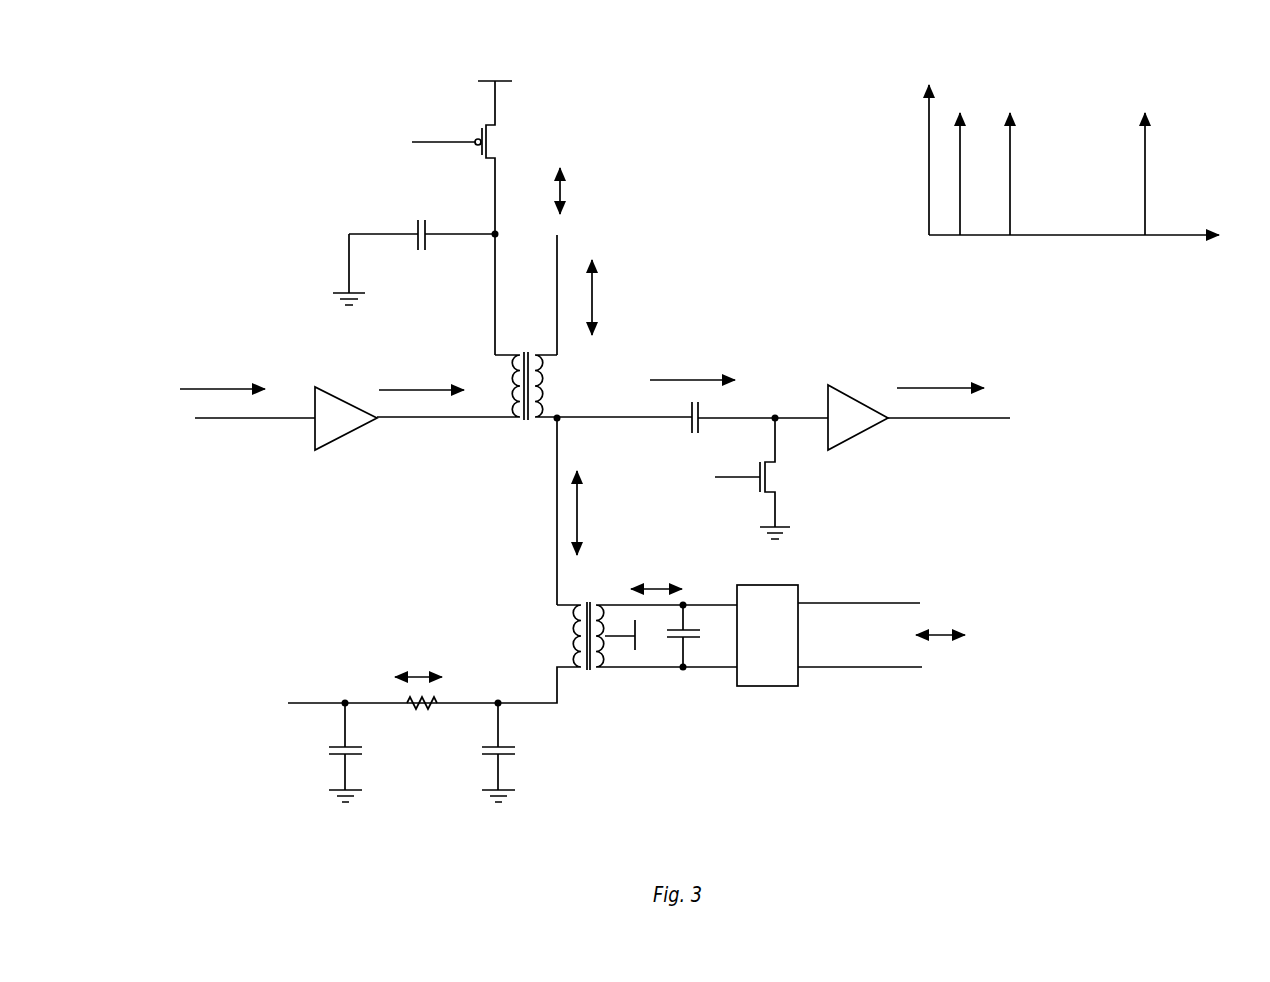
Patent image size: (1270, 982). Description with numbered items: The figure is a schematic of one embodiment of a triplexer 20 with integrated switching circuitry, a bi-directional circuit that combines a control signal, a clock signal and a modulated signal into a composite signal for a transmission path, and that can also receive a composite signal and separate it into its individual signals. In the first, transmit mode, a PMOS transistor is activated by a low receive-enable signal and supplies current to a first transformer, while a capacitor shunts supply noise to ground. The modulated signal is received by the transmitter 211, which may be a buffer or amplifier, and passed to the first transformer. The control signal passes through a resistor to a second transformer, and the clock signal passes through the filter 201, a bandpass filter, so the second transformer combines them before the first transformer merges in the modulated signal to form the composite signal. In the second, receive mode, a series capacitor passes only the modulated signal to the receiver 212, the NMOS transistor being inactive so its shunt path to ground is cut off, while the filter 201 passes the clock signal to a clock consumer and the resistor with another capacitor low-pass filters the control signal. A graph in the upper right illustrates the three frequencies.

The triplexer 20 is at (657, 65).
The transmitter 211 is at (345, 448).
The receiver 212 is at (870, 438).
The filter 201 is at (779, 655).